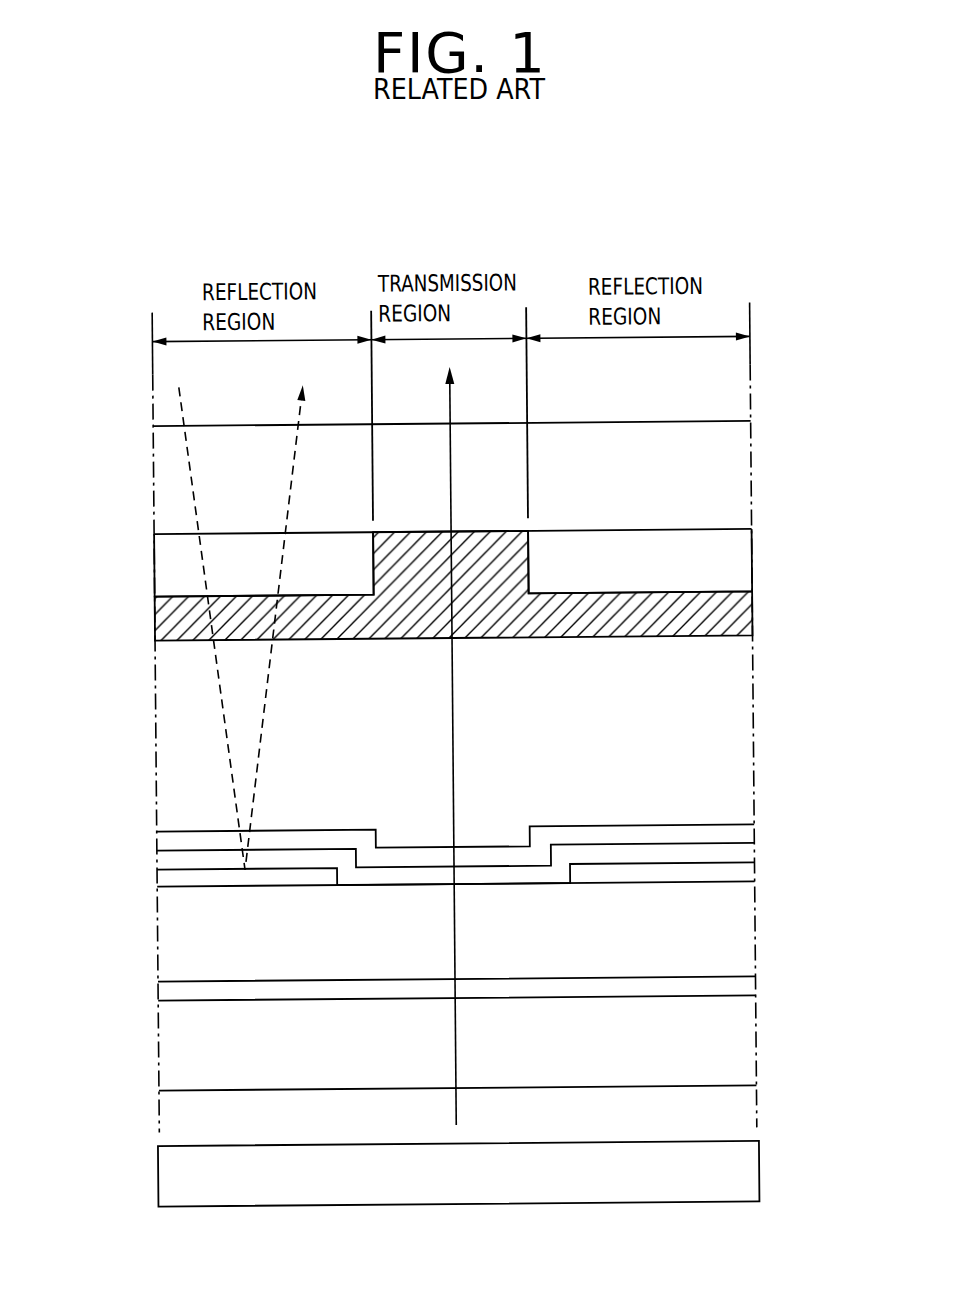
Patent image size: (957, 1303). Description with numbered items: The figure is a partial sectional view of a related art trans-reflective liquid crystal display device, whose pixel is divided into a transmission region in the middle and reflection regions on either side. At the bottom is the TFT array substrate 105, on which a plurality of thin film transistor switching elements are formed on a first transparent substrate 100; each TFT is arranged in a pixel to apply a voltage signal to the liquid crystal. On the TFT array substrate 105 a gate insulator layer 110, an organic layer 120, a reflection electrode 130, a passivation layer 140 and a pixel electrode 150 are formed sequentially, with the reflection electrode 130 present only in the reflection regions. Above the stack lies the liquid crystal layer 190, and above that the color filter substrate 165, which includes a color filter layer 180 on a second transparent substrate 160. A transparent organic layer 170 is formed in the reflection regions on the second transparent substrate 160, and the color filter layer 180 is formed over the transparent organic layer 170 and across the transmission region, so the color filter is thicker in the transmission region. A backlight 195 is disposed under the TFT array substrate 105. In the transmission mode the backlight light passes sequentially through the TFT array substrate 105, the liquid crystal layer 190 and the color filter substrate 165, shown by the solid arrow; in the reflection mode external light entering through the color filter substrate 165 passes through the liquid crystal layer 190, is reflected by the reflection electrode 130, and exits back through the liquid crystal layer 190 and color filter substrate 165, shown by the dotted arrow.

The first transparent substrate 100 is at (739, 1036).
The TFT array substrate 105 is at (152, 932).
The gate insulator layer 110 is at (739, 986).
The organic layer 120 is at (739, 938).
The reflection electrode 130 is at (739, 880).
The passivation layer 140 is at (740, 858).
The pixel electrode 150 is at (740, 836).
The second transparent substrate 160 is at (739, 472).
The color filter substrate 165 is at (152, 478).
The transparent organic layer 170 is at (739, 558).
The color filter layer 180 is at (739, 614).
The liquid crystal layer 190 is at (739, 708).
The backlight 195 is at (745, 1176).